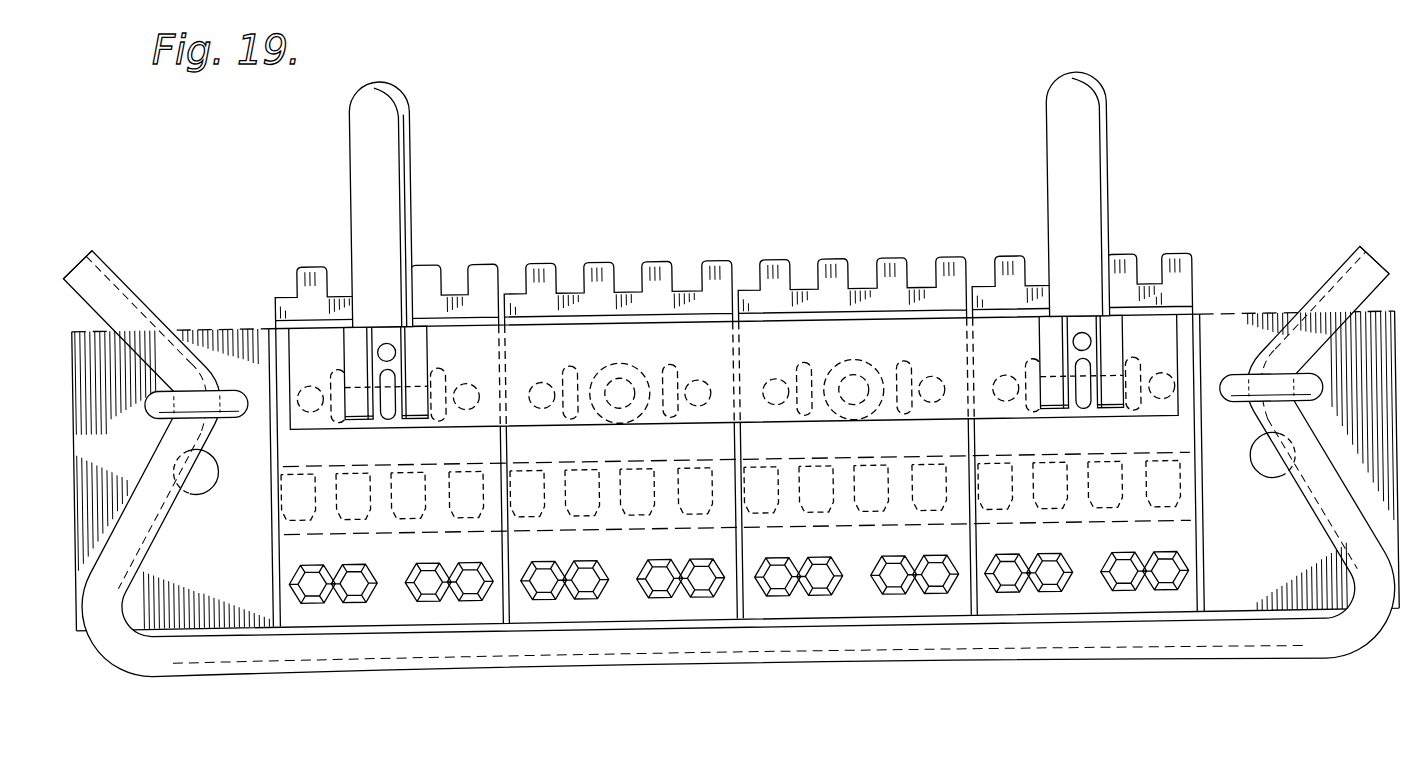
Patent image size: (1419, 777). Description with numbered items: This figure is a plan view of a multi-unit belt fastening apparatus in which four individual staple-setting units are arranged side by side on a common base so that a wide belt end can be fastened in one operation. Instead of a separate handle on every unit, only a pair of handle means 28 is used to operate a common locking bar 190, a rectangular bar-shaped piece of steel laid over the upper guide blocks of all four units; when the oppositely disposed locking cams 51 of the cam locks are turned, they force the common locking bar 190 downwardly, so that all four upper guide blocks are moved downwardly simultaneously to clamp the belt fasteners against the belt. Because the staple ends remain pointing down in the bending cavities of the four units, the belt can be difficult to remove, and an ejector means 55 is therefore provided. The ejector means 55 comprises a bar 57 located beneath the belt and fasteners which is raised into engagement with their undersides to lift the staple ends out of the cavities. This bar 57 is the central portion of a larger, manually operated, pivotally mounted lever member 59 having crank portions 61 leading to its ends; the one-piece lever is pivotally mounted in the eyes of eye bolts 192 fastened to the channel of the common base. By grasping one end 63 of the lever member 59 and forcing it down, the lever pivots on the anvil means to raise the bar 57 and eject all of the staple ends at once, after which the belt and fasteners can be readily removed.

The handle means 28 is at (437, 187).
The locking cam 51 is at (430, 339).
The ejector means 55 is at (1304, 508).
The bar 57 is at (752, 646).
The lever member 59 is at (155, 272).
The crank portion 61 is at (147, 213).
The end 63 is at (76, 246).
The common locking bar 190 is at (807, 356).
The eye bolt 192 is at (234, 379).